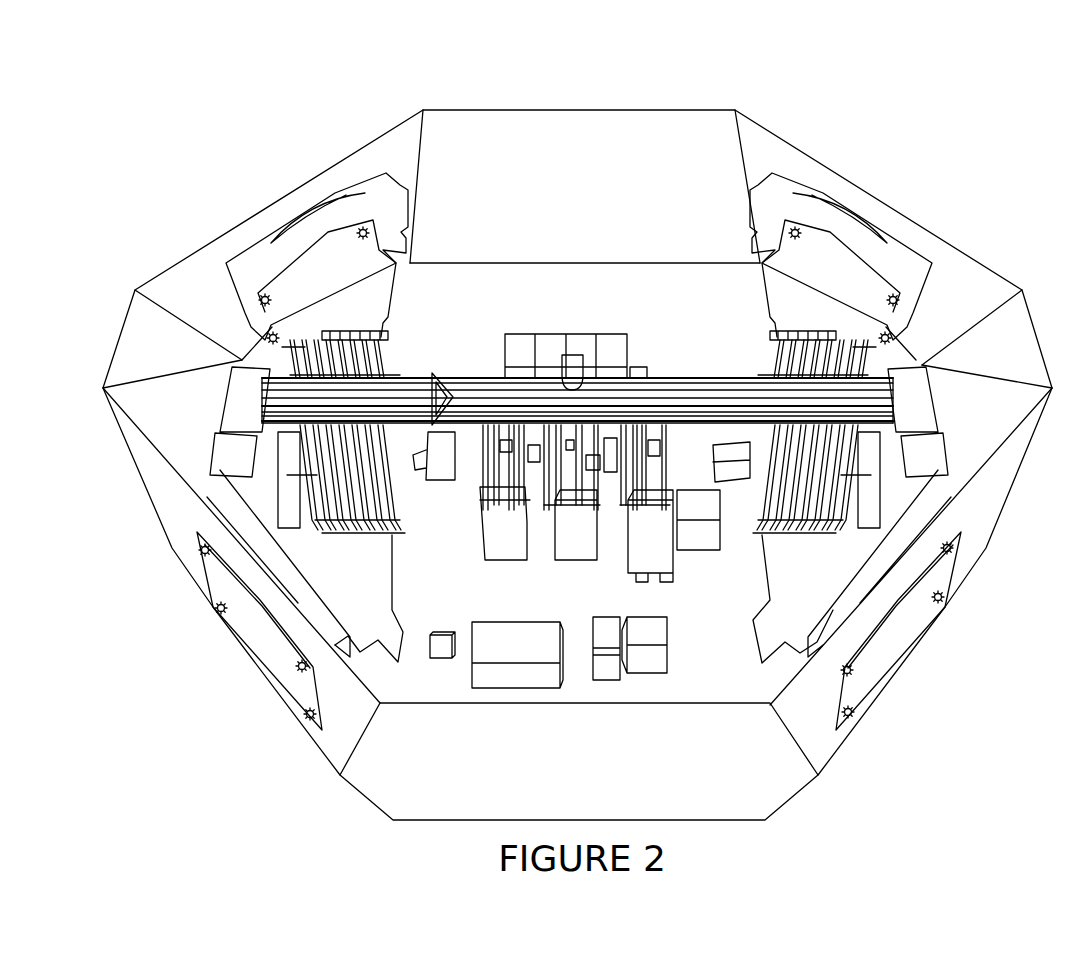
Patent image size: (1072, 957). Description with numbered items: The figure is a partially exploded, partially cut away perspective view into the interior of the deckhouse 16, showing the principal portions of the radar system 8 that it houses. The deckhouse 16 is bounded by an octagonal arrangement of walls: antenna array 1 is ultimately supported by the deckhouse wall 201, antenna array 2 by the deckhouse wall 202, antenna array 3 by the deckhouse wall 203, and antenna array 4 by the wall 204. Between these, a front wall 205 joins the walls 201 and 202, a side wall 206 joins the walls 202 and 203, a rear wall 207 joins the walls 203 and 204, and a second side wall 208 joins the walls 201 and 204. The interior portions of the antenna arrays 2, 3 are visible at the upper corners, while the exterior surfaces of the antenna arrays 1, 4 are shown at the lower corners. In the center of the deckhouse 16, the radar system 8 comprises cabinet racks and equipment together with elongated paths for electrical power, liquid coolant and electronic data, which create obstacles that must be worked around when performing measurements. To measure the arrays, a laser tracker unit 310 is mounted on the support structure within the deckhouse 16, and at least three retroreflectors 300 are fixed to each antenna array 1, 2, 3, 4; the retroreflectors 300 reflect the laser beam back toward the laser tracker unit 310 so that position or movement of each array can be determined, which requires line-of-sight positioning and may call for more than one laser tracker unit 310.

The deckhouse 16 is at (81, 355).
The deckhouse wall 201 is at (1005, 555).
The deckhouse wall 202 is at (983, 263).
The deckhouse wall 203 is at (291, 135).
The deckhouse wall 204 is at (131, 572).
The front wall 205 is at (988, 377).
The side wall 206 is at (575, 160).
The rear wall 207 is at (140, 377).
The side wall 208 is at (575, 762).
The radar system 8 is at (526, 315).
The laser tracker unit 310 is at (573, 352).
The retroreflectors 300 is at (266, 338).
The antenna array 1 is at (898, 631).
The antenna array 2 is at (841, 256).
The antenna array 3 is at (317, 256).
The antenna array 4 is at (259, 631).